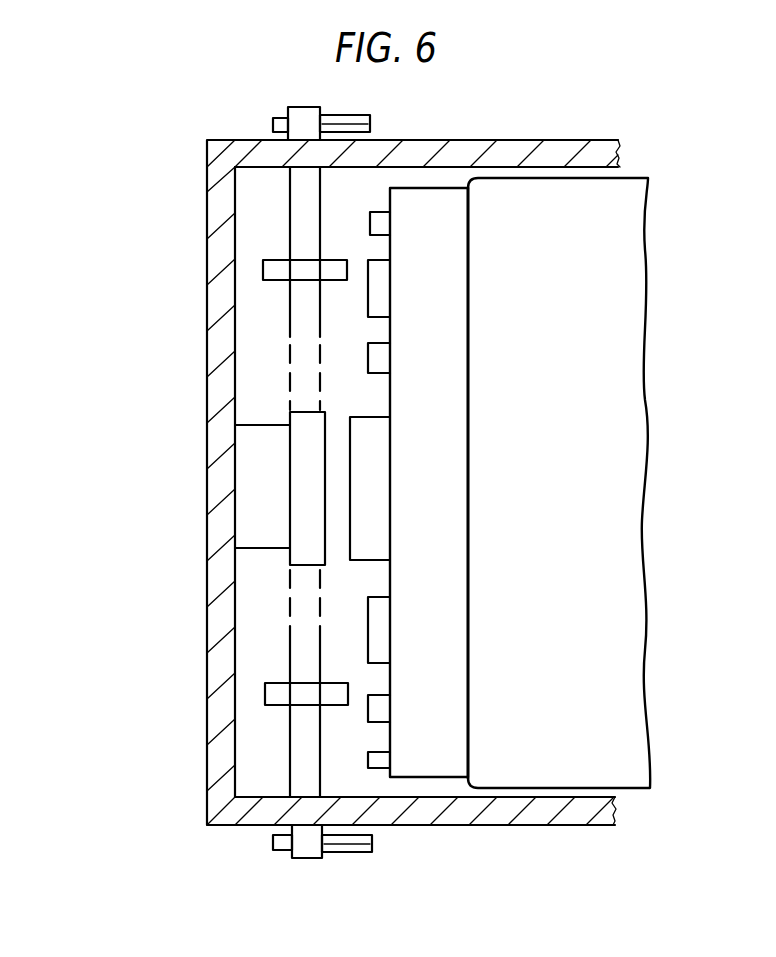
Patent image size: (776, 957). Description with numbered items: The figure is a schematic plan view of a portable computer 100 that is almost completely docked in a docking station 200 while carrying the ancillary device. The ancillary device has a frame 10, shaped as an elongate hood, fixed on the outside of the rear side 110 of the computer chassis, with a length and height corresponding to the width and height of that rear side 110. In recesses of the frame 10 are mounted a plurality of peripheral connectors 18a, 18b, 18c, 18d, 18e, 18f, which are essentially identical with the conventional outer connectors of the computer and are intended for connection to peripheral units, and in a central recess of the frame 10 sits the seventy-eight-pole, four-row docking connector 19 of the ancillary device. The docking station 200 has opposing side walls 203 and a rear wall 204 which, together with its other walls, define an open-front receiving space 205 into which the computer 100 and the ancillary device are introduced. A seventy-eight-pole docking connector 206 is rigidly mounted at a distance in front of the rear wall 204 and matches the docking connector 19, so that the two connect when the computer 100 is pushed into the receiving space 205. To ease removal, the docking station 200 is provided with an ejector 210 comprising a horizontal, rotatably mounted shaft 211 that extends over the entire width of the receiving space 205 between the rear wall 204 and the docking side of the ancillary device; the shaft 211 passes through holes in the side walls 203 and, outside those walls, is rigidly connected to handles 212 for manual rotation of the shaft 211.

The frame 10 is at (433, 190).
The peripheral connector 18a is at (376, 222).
The peripheral connector 18b is at (380, 290).
The peripheral connector 18c is at (383, 358).
The peripheral connector 18d is at (382, 618).
The peripheral connector 18e is at (380, 710).
The peripheral connector 18f is at (378, 770).
The docking connector 19 is at (380, 432).
The portable computer 100 is at (640, 212).
The rear side 110 is at (458, 482).
The docking station 200 is at (545, 136).
The side wall 203 is at (425, 834).
The rear wall 204 is at (222, 372).
The receiving space 205 is at (385, 177).
The docking connector 206 is at (295, 470).
The ejector 210 is at (260, 838).
The shaft 211 is at (292, 190).
The handle 212 is at (283, 124).